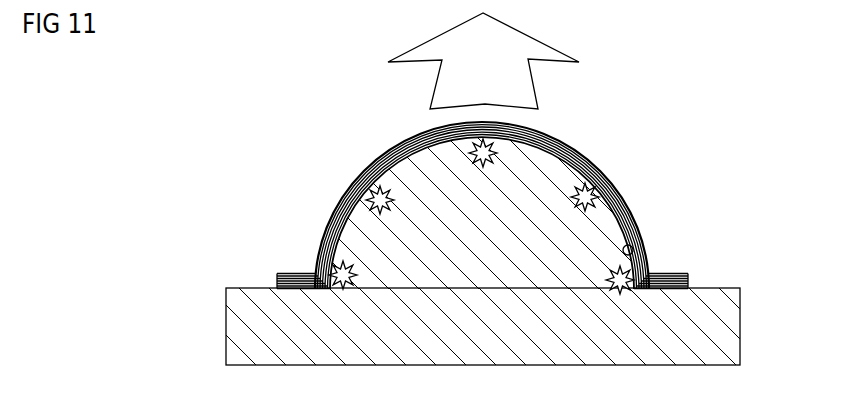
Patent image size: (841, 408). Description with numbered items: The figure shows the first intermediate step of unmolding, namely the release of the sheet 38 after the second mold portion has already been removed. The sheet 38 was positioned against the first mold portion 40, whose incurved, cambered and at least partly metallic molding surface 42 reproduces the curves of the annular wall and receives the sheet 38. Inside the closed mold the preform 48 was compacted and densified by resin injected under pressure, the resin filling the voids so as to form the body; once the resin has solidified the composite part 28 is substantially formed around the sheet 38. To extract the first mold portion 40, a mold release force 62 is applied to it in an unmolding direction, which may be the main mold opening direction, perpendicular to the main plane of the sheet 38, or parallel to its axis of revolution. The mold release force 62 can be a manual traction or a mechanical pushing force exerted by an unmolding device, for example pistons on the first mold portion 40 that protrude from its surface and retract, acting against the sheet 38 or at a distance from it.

The composite part 28 is at (390, 192).
The sheet 38 is at (393, 147).
The first mold portion 40 is at (226, 313).
The molding surface 42 is at (645, 237).
The preform 48 is at (330, 213).
The mold release force 62 is at (537, 90).